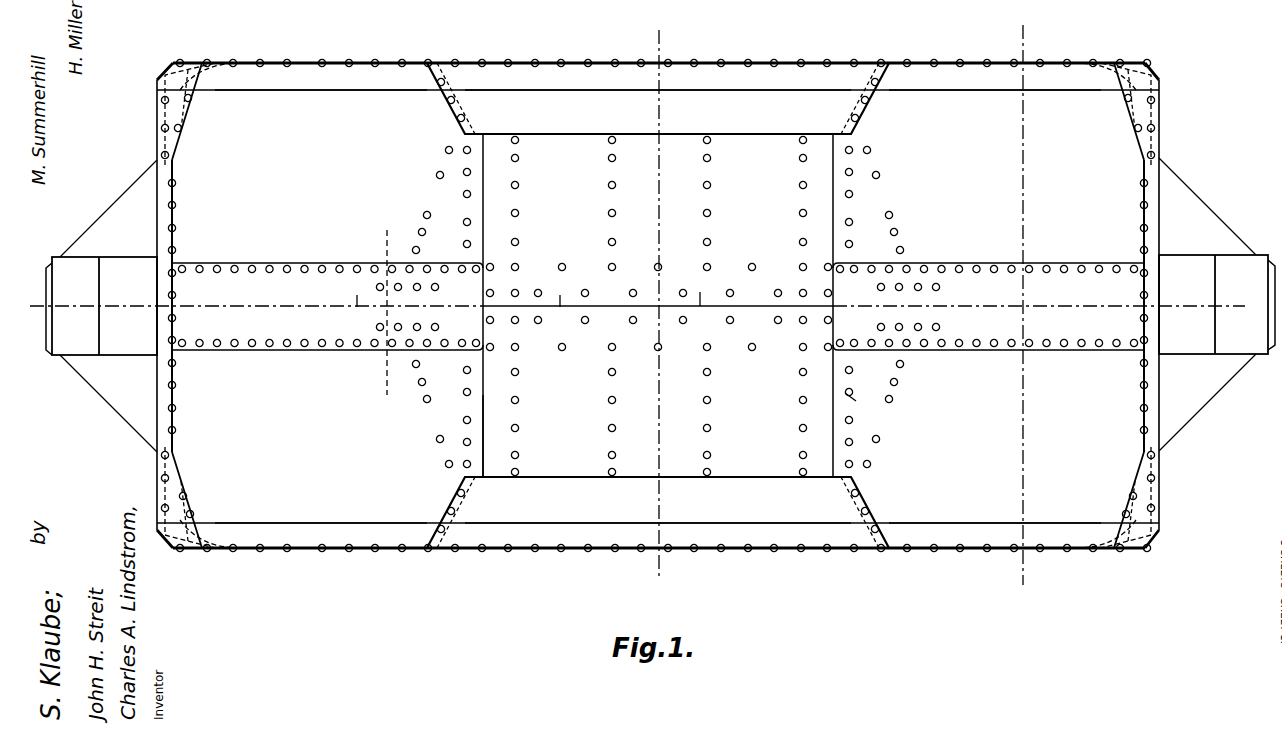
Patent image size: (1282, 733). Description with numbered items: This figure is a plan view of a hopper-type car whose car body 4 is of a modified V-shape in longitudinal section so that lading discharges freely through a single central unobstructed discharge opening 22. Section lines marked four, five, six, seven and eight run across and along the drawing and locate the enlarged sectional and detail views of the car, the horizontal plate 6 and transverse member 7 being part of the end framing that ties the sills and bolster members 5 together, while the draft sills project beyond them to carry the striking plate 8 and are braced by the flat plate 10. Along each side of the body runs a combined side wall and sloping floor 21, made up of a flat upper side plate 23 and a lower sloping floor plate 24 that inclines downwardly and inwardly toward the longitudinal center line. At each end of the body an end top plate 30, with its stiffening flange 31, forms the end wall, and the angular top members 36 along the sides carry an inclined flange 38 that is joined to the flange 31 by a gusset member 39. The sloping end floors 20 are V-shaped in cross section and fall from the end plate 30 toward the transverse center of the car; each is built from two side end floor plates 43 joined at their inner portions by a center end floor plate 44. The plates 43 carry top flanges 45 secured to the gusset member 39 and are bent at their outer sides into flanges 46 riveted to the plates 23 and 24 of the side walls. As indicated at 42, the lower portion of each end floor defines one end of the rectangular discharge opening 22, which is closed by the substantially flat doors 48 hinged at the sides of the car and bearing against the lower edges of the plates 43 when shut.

The car body 4 is at (935, 306).
The bolster member 5 is at (657, 307).
The horizontally extending flat plate 6 is at (30, 306).
The transverse member 7 is at (384, 313).
The striking plate 8 is at (48, 265).
The flat plate member 10 is at (660, 305).
The sloping end floor 20 is at (658, 306).
The combined side wall and sloping floor 21 is at (773, 305).
The central discharge opening 22 is at (476, 397).
The upper side plate 23 is at (340, 63).
The sloping floor plate 24 is at (542, 305).
The end top plate 30 is at (157, 208).
The stiffening flange 31 is at (157, 248).
The top member 36 is at (628, 80).
The inclined flange 38 is at (970, 80).
The gusset member 39 is at (157, 113).
The lower portion of sloping end floor 42 is at (483, 195).
The side end floor plate 43 is at (597, 306).
The center end floor plate 44 is at (658, 306).
The top flange 45 is at (183, 102).
The outer side flange 46 is at (262, 66).
The discharge door 48 is at (658, 305).